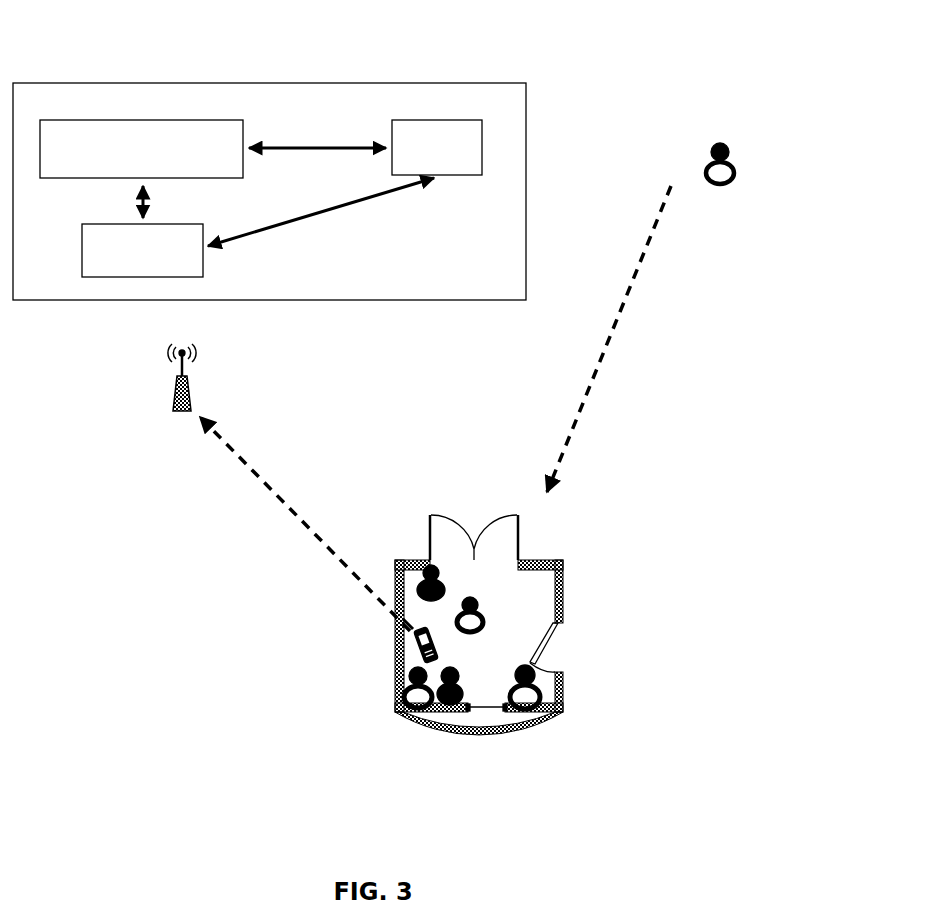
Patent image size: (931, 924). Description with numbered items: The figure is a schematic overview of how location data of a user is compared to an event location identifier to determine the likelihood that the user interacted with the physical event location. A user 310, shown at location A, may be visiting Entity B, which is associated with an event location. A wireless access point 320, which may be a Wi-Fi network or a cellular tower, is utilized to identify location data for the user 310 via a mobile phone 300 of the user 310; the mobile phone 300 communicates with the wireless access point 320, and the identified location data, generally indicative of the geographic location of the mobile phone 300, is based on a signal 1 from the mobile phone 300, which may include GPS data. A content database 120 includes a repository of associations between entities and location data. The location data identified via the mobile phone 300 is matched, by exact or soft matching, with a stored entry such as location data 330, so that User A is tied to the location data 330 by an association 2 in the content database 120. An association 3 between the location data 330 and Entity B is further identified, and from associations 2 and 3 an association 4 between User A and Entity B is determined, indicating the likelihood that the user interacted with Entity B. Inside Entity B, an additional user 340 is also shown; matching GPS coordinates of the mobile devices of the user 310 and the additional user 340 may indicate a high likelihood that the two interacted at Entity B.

The content database 120 is at (342, 248).
The location data 330 is at (143, 120).
The user 310 is at (730, 150).
The wireless access point 320 is at (177, 378).
The mobile phone 300 is at (433, 630).
The additional user 340 is at (448, 713).
The signal 1 is at (305, 524).
The association 2 is at (393, 337).
The association 3 is at (317, 133).
The association 4 is at (321, 212).